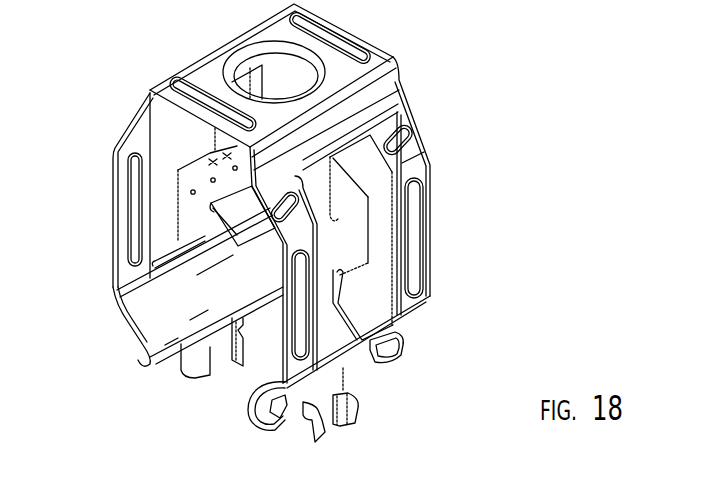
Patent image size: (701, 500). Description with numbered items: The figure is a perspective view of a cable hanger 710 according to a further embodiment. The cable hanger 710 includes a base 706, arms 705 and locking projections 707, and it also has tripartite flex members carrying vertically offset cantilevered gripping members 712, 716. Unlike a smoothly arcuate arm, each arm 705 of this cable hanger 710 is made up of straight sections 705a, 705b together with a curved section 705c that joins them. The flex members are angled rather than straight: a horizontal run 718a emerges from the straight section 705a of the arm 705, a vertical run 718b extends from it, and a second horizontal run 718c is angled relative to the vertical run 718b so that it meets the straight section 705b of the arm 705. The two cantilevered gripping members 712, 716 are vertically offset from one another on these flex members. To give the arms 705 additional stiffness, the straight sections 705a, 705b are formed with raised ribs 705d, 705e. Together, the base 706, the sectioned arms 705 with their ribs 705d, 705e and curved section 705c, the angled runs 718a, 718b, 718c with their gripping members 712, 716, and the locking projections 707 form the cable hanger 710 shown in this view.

The arm 705 is at (445, 160).
The straight section 705a is at (414, 152).
The straight section 705b is at (428, 266).
The curved section 705c is at (260, 384).
The raised rib 705d is at (399, 133).
The raised rib 705e is at (418, 283).
The base 706 is at (336, 77).
The locking projection 707 is at (336, 425).
The cable hanger 710 is at (505, 190).
The cantilevered gripping member 712 is at (344, 182).
The cantilevered gripping member 716 is at (236, 222).
The horizontal run 718a is at (318, 200).
The vertical run 718b is at (362, 250).
The horizontal run 718c is at (372, 312).